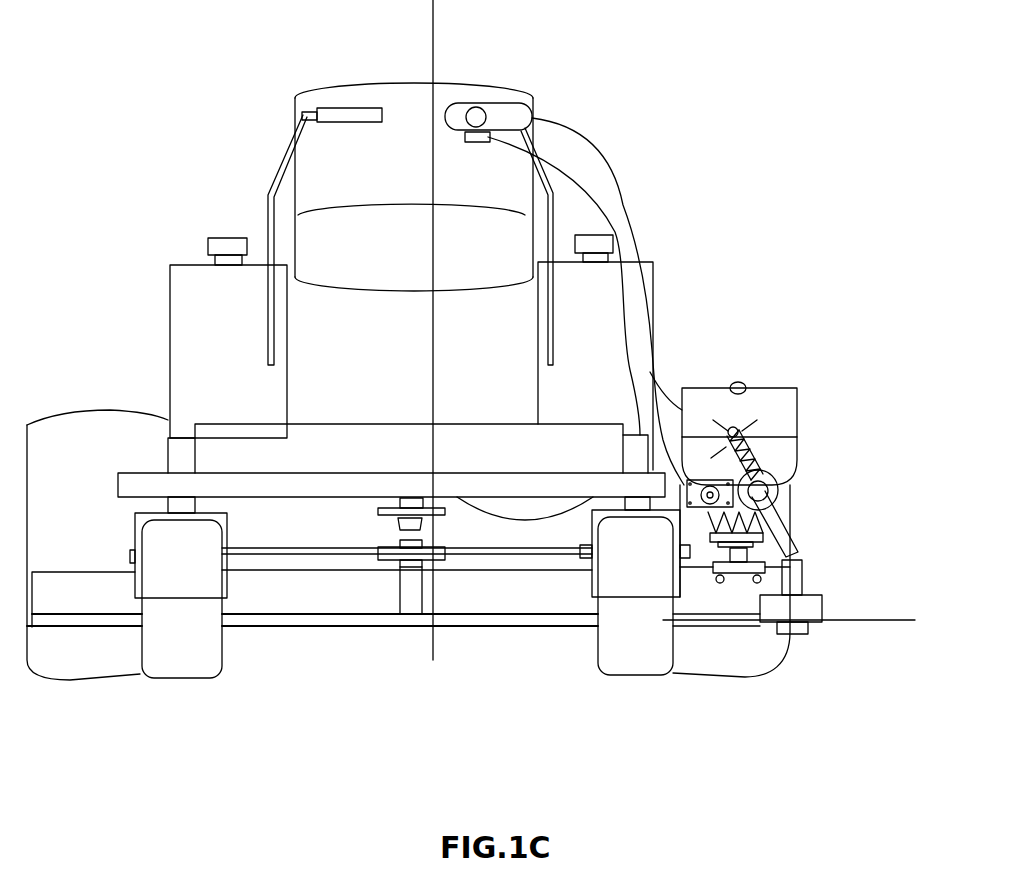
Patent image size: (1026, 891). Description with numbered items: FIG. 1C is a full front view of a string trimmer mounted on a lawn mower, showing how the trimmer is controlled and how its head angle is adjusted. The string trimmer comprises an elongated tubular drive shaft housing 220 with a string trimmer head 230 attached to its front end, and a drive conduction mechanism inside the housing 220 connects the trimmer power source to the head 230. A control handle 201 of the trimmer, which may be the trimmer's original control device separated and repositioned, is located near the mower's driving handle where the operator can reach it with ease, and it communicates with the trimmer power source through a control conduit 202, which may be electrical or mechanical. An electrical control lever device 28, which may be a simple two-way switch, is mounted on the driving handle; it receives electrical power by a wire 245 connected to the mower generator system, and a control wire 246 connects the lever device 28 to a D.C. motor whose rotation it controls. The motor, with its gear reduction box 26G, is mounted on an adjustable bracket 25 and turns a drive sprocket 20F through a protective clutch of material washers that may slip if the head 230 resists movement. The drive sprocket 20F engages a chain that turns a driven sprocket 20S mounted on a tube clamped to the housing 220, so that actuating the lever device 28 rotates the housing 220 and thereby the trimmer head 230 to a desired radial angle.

The control handle 201 is at (525, 105).
The electrical control lever device 28 is at (479, 142).
The control conduit 202 is at (623, 330).
The control wire 246 is at (637, 252).
The wire 245 is at (700, 427).
The driven sprocket 20S is at (772, 493).
The elongated tubular drive shaft housing 220 is at (772, 533).
The string trimmer head 230 is at (792, 608).
The adjustable bracket 25 is at (690, 505).
The gear reduction box 26G is at (692, 500).
The drive sprocket 20F is at (710, 493).